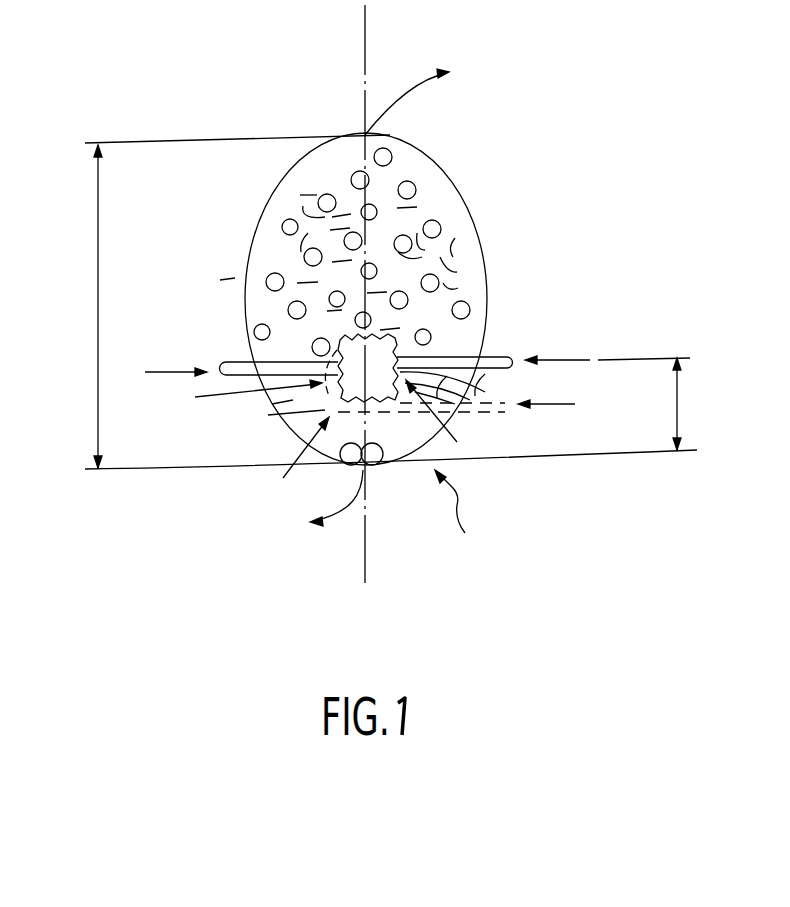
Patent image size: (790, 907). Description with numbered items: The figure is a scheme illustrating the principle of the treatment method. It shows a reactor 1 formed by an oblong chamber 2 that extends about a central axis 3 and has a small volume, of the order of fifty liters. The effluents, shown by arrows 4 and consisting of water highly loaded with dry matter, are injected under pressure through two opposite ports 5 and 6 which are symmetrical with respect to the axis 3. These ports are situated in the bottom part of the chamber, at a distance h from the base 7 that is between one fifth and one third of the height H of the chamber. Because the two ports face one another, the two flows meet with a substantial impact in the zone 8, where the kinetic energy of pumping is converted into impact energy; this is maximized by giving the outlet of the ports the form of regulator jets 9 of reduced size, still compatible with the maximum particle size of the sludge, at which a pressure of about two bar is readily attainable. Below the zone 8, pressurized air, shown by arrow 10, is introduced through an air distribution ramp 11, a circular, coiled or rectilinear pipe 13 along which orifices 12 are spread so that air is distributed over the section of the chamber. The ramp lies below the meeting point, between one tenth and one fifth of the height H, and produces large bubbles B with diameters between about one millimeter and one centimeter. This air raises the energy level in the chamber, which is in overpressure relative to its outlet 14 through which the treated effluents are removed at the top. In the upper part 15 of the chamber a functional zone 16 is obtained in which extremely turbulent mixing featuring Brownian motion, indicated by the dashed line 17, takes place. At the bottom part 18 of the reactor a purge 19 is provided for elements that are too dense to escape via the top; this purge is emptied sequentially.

The reactor 1 is at (557, 152).
The oblong chamber 2 is at (487, 240).
The axis 3 is at (362, 37).
The effluents 4 is at (163, 371).
The port 5 is at (253, 362).
The port 6 is at (483, 331).
The base 7 is at (393, 463).
The zone 8 is at (348, 345).
The outlet of the ports / regulator jets 9 is at (478, 318).
The pressurized air 10 is at (552, 406).
The air distribution ramp 11 is at (297, 462).
The orifices 12 is at (485, 392).
The pipe 13 is at (278, 407).
The outlet 14 is at (360, 130).
The upper part 15 is at (438, 183).
The functional zone 16 is at (423, 214).
The dashed line (Brownian motion) 17 is at (450, 222).
The bottom part 18 is at (465, 510).
The purge 19 is at (365, 505).
The bubbles B is at (322, 195).
The height of the chamber H is at (97, 317).
The distance from the base h is at (683, 412).